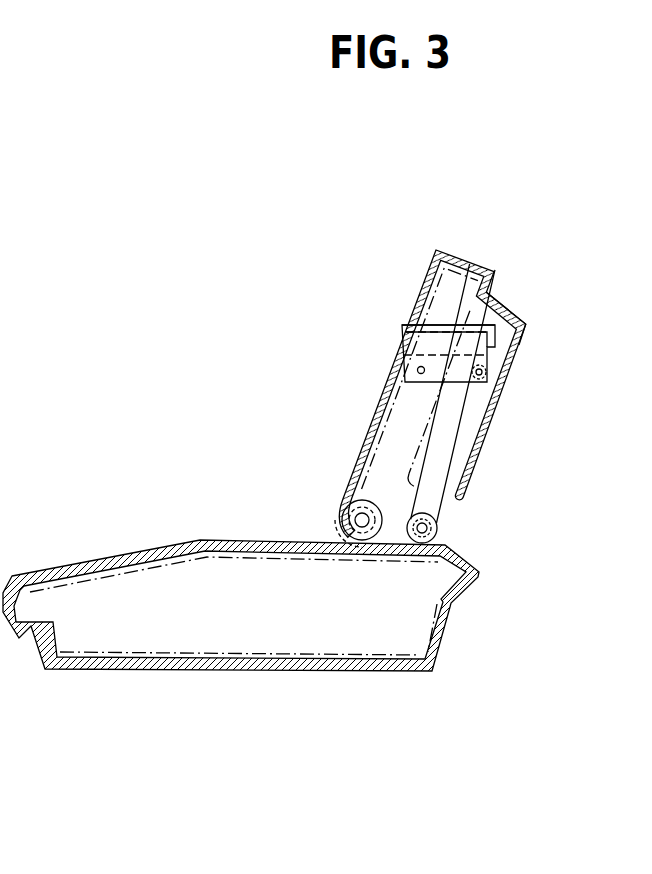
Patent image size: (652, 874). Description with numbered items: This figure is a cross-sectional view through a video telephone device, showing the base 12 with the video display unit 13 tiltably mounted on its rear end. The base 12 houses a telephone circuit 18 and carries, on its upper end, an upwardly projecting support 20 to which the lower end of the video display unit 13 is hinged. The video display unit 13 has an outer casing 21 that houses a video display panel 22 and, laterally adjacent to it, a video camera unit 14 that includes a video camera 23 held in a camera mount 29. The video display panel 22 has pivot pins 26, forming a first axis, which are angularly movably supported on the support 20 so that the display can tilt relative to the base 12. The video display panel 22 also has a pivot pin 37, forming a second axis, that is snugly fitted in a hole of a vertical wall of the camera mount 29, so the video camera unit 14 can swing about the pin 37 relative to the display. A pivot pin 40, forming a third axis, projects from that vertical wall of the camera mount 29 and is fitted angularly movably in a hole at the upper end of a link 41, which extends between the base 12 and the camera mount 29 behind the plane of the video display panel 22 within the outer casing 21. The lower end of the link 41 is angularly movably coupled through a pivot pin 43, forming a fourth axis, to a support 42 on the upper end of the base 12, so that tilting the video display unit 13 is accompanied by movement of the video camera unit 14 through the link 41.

The base 12 is at (207, 680).
The video display unit 13 is at (430, 242).
The video camera unit 14 is at (396, 323).
The telephone circuit 18 is at (333, 660).
The support 20 is at (334, 538).
The outer casing 21 is at (524, 313).
The video display panel 22 is at (428, 283).
The video camera 23 is at (403, 340).
The pivot pins 26 is at (355, 515).
The camera mount 29 is at (473, 343).
The pivot pin 37 is at (418, 372).
The pivot pin 40 is at (484, 372).
The link 41 is at (458, 427).
The support 42 is at (437, 533).
The pivot pin 43 is at (427, 527).